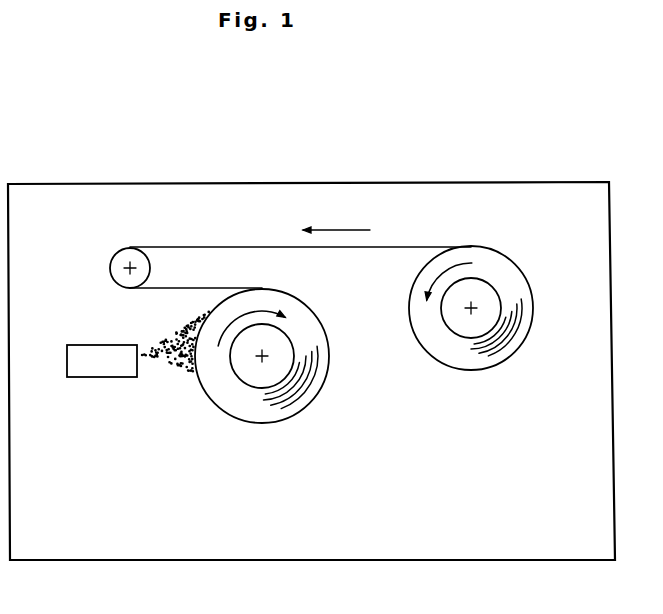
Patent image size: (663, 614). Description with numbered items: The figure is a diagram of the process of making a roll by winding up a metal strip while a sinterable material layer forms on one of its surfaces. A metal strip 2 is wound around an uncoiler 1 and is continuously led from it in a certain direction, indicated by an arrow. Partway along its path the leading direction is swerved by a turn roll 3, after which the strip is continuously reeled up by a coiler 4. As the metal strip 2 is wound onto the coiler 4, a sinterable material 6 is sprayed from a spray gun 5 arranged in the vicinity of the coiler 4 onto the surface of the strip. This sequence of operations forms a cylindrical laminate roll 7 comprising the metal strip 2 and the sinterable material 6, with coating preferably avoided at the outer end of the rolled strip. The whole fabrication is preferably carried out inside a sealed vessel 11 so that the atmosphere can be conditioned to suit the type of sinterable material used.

The uncoiler 1 is at (485, 323).
The metal strip 2 is at (210, 247).
The turn roll 3 is at (130, 249).
The coiler 4 is at (255, 375).
The spray gun 5 is at (110, 367).
The sinterable material 6 is at (175, 363).
The cylindrical laminate roll 7 is at (327, 402).
The sealed vessel 11 is at (529, 182).